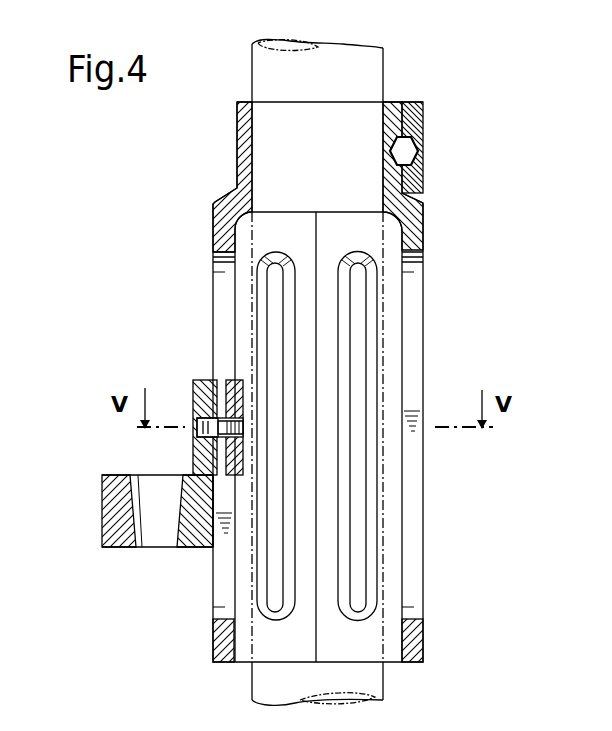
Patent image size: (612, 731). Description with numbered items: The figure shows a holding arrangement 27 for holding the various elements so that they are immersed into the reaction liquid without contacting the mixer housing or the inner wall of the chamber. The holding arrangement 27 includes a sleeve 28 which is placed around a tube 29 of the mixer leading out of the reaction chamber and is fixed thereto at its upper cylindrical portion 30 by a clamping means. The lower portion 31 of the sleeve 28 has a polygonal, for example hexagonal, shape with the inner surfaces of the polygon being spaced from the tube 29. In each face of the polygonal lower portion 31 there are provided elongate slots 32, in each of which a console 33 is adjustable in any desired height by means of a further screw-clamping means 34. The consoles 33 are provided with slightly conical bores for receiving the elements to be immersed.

The holding arrangement 27 is at (488, 203).
The sleeve 28 is at (219, 195).
The tube 29 is at (385, 63).
The upper cylindrical portion 30 is at (420, 125).
The lower portion 31 is at (423, 645).
The elongate slots 32 is at (268, 278).
The console 33 is at (121, 547).
The screw-clamping means 34 is at (221, 372).